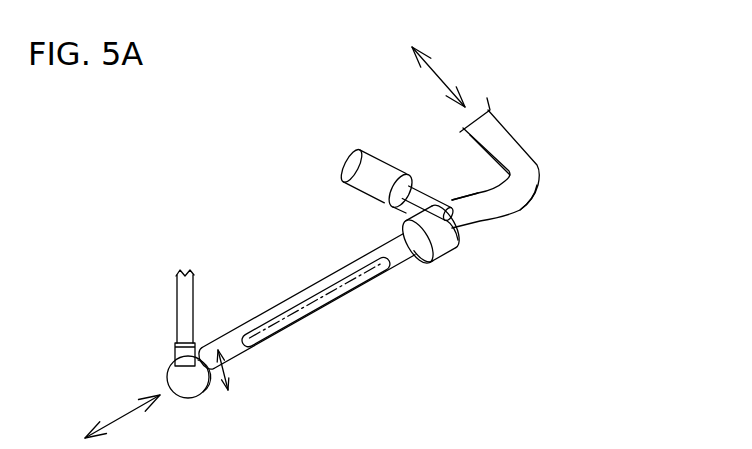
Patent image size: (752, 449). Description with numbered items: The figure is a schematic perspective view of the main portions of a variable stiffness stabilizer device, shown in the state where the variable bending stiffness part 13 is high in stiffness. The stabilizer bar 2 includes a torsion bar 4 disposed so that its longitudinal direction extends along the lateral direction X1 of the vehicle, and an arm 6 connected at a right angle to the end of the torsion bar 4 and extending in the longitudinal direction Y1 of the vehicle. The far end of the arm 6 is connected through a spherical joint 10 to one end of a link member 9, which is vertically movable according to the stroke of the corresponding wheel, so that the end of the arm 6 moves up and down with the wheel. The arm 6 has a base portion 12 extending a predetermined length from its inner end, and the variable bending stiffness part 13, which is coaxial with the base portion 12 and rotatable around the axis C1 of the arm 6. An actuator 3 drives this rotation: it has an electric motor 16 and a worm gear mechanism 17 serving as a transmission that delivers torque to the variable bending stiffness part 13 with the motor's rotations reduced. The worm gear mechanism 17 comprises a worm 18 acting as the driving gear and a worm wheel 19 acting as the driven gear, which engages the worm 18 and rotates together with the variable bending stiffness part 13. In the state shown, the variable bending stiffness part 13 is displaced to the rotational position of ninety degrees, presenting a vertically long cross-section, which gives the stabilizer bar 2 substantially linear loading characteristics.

The stabilizer bar 2 is at (547, 188).
The actuator 3 is at (458, 272).
The torsion bar 4 is at (513, 153).
The arm 6 is at (498, 218).
The link member 9 is at (177, 300).
The spherical joint 10 is at (192, 383).
The base portion 12 is at (478, 216).
The variable bending stiffness part 13 is at (317, 285).
The electric motor 16 is at (368, 168).
The worm gear mechanism 17 is at (418, 265).
The worm 18 is at (427, 202).
The worm wheel 19 is at (428, 262).
The lateral direction X1 is at (447, 75).
The longitudinal direction Y1 is at (125, 410).
The axis of the arm C1 is at (301, 308).